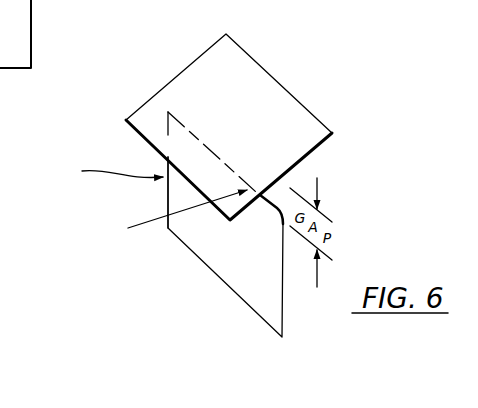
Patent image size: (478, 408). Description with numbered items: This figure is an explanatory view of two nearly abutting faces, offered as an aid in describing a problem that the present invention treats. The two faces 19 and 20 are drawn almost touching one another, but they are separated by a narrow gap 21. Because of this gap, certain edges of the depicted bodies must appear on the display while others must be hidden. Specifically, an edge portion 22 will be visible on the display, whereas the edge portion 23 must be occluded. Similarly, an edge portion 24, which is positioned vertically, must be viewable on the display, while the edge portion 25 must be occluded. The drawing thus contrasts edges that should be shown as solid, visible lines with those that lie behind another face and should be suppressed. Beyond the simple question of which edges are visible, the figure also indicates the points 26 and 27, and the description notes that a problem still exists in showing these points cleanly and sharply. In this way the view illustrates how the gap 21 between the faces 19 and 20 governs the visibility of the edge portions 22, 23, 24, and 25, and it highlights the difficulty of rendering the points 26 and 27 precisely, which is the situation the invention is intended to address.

The face 19 is at (253, 297).
The face 20 is at (298, 107).
The gap 21 is at (272, 192).
The edge portion 22 is at (269, 211).
The edge portion 23 is at (202, 140).
The edge portion 24 is at (168, 200).
The edge portion 25 is at (168, 132).
The point 26 is at (173, 214).
The point 27 is at (109, 172).